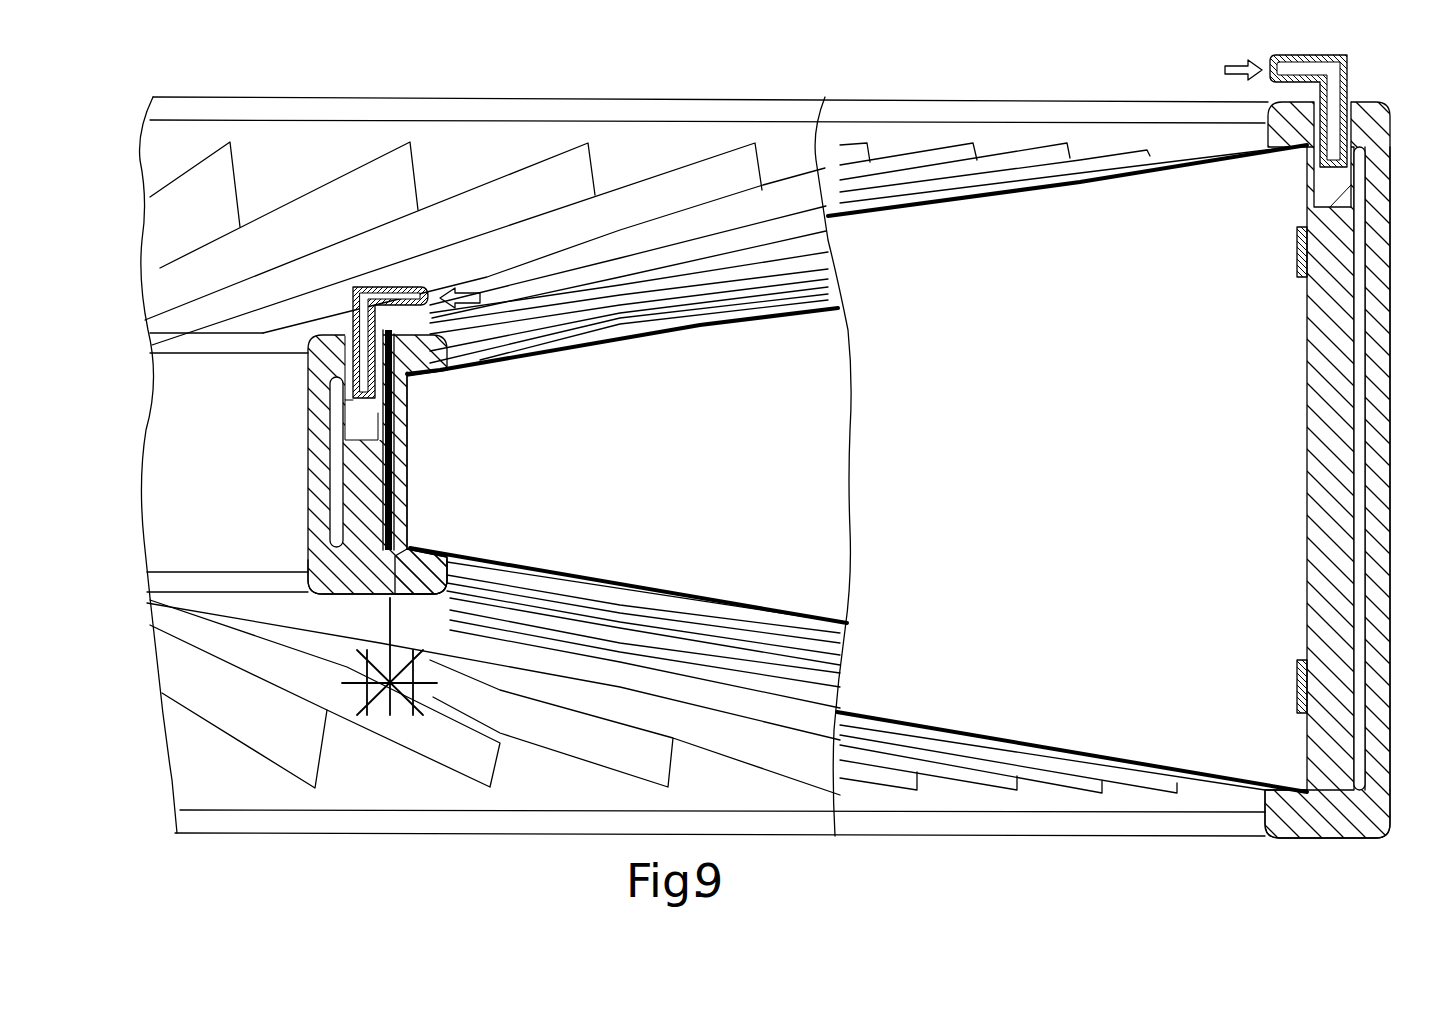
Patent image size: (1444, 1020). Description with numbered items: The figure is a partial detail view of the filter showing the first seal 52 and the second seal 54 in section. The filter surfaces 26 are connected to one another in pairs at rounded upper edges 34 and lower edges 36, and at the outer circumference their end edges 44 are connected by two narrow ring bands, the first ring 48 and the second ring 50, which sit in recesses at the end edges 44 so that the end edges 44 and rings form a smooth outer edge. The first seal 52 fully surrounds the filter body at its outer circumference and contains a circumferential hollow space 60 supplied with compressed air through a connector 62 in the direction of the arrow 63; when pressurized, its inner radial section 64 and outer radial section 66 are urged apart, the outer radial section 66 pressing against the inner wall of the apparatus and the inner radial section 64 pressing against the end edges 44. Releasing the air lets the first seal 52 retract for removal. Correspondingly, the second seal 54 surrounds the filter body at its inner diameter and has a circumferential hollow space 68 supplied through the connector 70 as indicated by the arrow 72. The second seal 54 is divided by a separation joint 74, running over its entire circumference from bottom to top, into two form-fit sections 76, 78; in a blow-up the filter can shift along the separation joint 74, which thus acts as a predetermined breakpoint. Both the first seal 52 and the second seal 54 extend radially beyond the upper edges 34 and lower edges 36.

The filter surfaces 26 is at (657, 372).
The upper edges 34 is at (545, 348).
The lower edges 36 is at (612, 576).
The end edges 44 is at (1306, 447).
The first ring 48 is at (1297, 690).
The second ring 50 is at (1297, 258).
The first seal 52 is at (1323, 615).
The second seal 54 is at (355, 527).
The hollow space 60 is at (1357, 467).
The connector 62 is at (1313, 56).
The arrow 63 is at (1240, 64).
The inner radial section 64 is at (1323, 363).
The outer radial section 66 is at (1370, 358).
The hollow space 68 is at (332, 446).
The connector 70 is at (388, 285).
The arrow 72 is at (465, 294).
The separation joint 74 is at (407, 472).
The form-fit section 76 is at (427, 544).
The form-fit section 78 is at (332, 566).